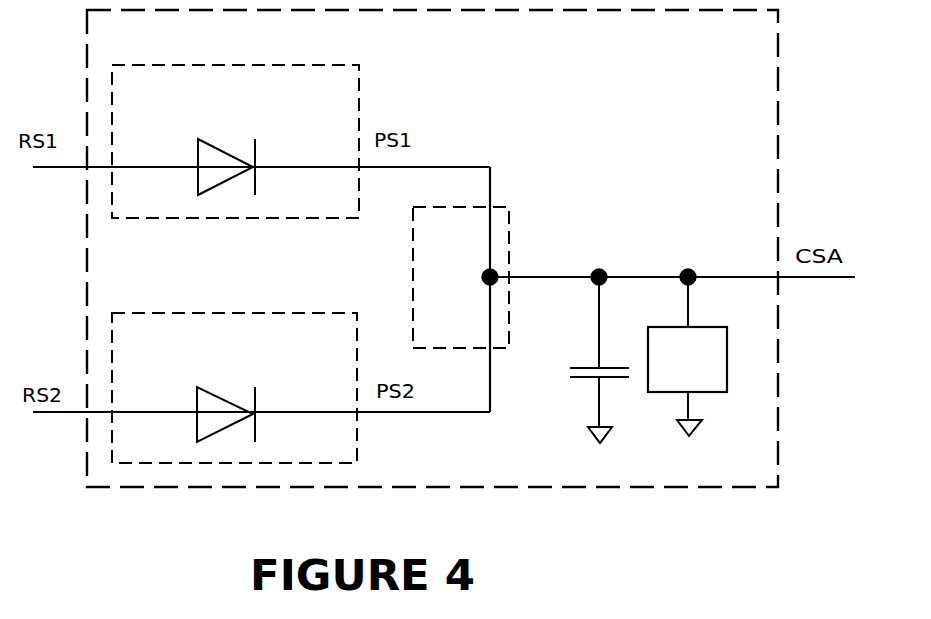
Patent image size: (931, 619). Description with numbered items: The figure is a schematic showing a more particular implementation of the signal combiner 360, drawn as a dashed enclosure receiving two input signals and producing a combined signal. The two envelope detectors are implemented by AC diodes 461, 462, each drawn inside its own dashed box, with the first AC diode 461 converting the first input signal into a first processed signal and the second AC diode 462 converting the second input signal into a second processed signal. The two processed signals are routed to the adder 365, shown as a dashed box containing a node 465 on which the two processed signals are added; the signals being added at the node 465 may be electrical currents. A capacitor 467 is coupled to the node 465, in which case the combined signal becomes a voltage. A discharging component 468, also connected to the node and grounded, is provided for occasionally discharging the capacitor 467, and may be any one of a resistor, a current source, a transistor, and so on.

The signal combiner 360 is at (223, 46).
The AC diode 461 is at (325, 110).
The AC diode 462 is at (325, 358).
The adder 365 is at (458, 241).
The node 465 is at (487, 285).
The capacitor 467 is at (592, 365).
The discharging component 468 is at (706, 370).